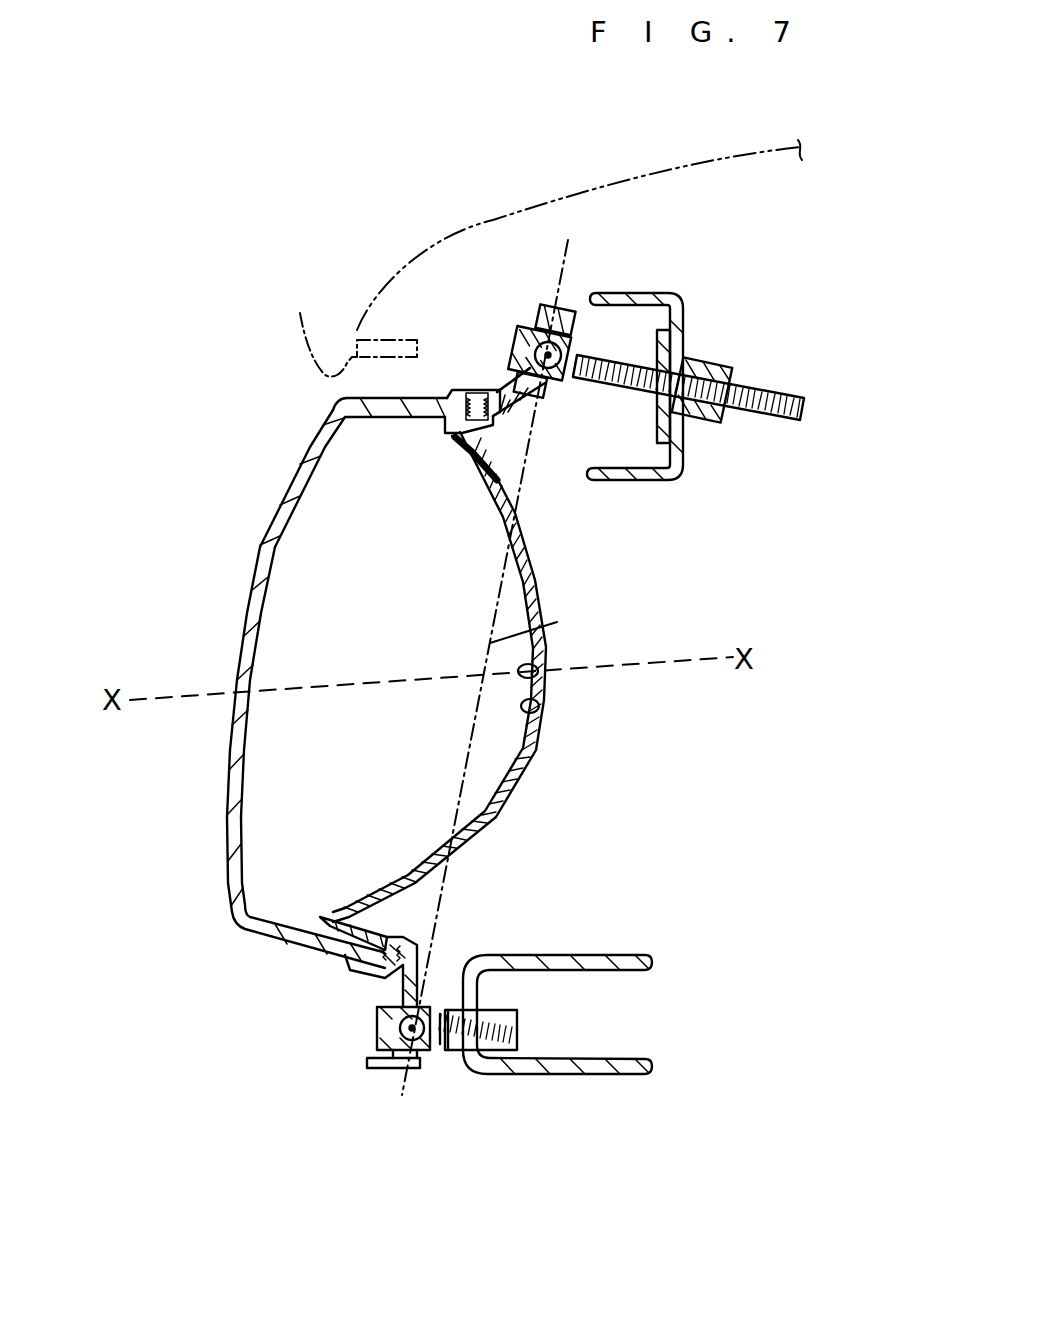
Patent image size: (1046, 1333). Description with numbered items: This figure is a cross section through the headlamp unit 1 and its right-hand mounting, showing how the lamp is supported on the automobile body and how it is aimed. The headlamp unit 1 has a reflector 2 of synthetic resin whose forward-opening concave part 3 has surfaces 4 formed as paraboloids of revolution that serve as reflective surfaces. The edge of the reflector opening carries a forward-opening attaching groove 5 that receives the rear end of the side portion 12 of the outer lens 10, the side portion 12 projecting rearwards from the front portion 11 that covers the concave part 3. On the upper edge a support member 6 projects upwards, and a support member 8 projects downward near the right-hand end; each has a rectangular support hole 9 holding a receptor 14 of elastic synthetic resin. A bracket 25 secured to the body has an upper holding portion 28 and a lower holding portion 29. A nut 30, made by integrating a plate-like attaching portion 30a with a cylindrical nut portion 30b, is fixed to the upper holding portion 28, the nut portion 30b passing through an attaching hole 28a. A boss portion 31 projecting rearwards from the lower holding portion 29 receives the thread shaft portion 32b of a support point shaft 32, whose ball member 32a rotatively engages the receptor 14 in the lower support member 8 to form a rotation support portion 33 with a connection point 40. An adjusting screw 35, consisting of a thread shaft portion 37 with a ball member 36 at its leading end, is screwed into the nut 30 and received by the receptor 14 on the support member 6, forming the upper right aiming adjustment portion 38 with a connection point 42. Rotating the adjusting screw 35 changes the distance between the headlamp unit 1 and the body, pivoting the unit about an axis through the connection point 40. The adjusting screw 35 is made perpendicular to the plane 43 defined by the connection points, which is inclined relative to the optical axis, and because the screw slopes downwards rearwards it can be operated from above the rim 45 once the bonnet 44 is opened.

The headlamp unit 1 is at (239, 260).
The reflector 2 is at (547, 592).
The concave part 3 is at (543, 713).
The surfaces 4 is at (547, 677).
The attaching groove 5 is at (343, 963).
The support member 6 is at (548, 322).
The support member 8 is at (413, 1073).
The support hole 9 is at (528, 335).
The outer lens 10 is at (280, 507).
The front portion 11 is at (252, 580).
The side portion 12 is at (273, 943).
The receptor 14 is at (367, 1063).
The bracket 25 is at (653, 483).
The holding portion 28 is at (630, 290).
The attaching hole 28a is at (688, 368).
The holding portion 29 is at (607, 957).
The nut 30 is at (723, 417).
The attaching portion 30a is at (657, 427).
The nut portion 30b is at (715, 382).
The boss portion 31 is at (517, 1017).
The support point shaft 32 is at (443, 1008).
The ball member 32a is at (377, 1023).
The thread shaft portion 32b is at (483, 1043).
The rotation support portion 33 is at (423, 1095).
The adjusting screw 35 is at (795, 408).
The ball member 36 is at (512, 354).
The thread shaft portion 37 is at (750, 400).
The aiming adjustment portion 38 is at (580, 290).
The connection point 40 is at (373, 1070).
The connection point 42 is at (520, 350).
The plane 43 is at (557, 622).
The bonnet 44 is at (520, 212).
The rim 45 is at (348, 328).